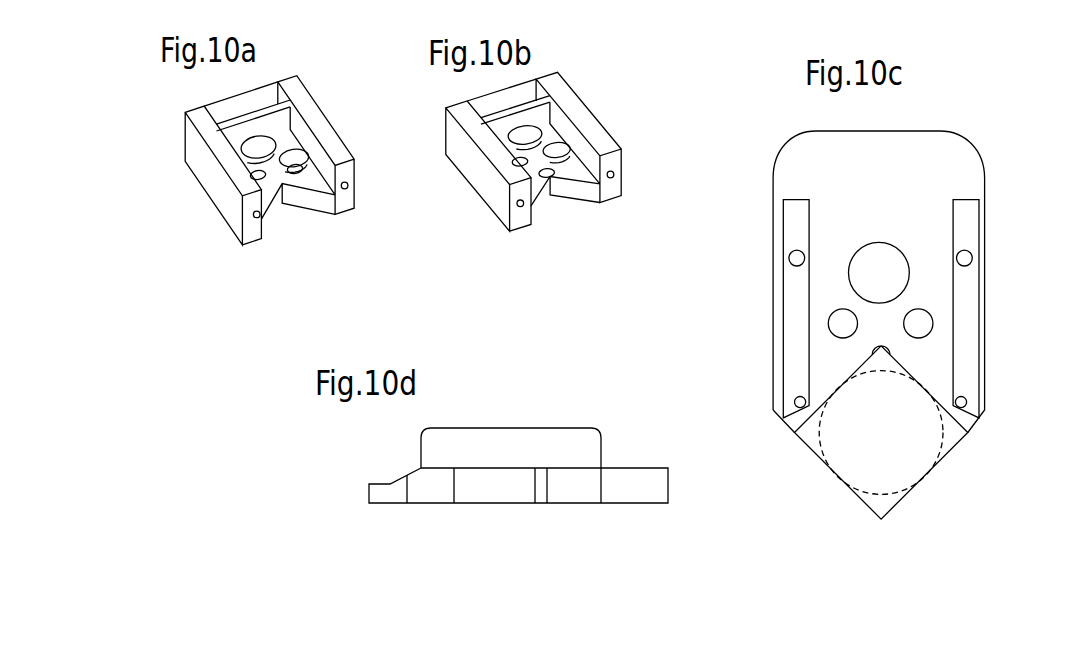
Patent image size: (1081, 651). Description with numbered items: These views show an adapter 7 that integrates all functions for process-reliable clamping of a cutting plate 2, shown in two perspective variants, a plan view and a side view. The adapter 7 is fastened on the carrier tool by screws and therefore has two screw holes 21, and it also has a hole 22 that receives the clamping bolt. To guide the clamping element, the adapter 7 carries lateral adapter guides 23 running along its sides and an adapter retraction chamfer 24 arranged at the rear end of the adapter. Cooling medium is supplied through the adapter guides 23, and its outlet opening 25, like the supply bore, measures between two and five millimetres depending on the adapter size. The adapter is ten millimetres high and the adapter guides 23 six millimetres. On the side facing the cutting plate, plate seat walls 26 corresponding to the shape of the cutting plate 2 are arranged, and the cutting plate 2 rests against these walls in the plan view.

In FIG. 10c, the cutting plate 2 is at (950, 444).
In FIG. 10a, the adapter 7 is at (264, 179).
In FIG. 10b, the adapter 7 is at (542, 166).
In FIG. 10c, the adapter 7 is at (877, 325).
In FIG. 10d, the adapter 7 is at (602, 452).
In FIG. 10a, the screw holes 21 is at (298, 167).
In FIG. 10c, the screw holes 21 is at (832, 328).
In FIG. 10a, the hole 22 is at (270, 142).
In FIG. 10b, the hole 22 is at (528, 130).
In FIG. 10c, the hole 22 is at (883, 260).
In FIG. 10a, the adapter guides 23 is at (330, 132).
In FIG. 10b, the adapter guides 23 is at (585, 120).
In FIG. 10c, the adapter guides 23 is at (793, 312).
In FIG. 10a, the adapter retraction chamfer 24 is at (229, 99).
In FIG. 10b, the adapter retraction chamfer 24 is at (495, 93).
In FIG. 10b, the outlet opening 25 is at (515, 203).
In FIG. 10a, the plate seat walls 26 is at (266, 221).
In FIG. 10b, the plate seat walls 26 is at (565, 188).